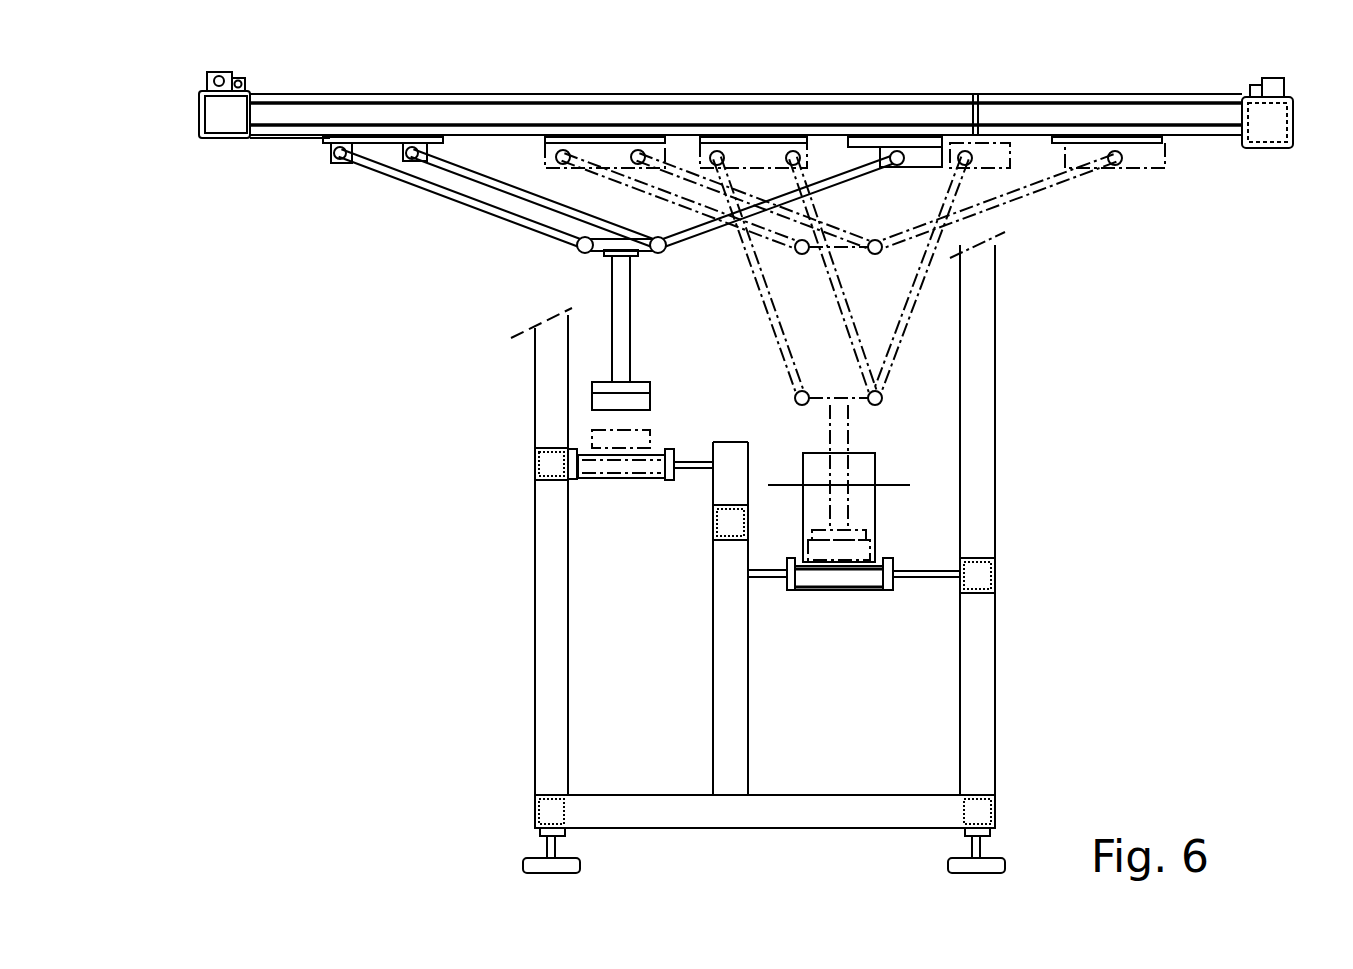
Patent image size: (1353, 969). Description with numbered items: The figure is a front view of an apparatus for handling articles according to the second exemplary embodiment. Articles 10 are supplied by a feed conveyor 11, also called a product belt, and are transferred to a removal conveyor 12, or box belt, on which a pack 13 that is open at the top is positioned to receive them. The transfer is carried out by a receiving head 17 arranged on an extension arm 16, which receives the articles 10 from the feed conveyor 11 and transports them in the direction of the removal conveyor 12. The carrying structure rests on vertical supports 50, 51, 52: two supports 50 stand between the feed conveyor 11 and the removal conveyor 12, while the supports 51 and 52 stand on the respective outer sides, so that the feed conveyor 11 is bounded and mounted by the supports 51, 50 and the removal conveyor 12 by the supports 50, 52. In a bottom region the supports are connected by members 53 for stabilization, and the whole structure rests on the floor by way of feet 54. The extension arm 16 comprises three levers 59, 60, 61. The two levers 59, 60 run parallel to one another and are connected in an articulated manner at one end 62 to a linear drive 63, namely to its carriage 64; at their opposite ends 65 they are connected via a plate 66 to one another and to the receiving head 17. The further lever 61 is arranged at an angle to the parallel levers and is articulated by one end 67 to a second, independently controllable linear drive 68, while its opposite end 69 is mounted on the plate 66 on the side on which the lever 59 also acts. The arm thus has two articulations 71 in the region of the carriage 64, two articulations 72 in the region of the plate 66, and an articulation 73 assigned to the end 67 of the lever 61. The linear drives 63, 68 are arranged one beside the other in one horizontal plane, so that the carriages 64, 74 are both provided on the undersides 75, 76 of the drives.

The articles 10 is at (600, 398).
The feed conveyor 11 is at (638, 485).
The removal conveyor 12 is at (858, 598).
The pack 13 is at (885, 510).
The extension arm 16 is at (712, 195).
The receiving head 17 is at (650, 345).
The supports 50 is at (735, 738).
The support 51 is at (550, 680).
The support 52 is at (980, 702).
The members 53 is at (873, 808).
The feet 54 is at (538, 865).
The lever 59 is at (490, 180).
The lever 60 is at (480, 218).
The lever 61 is at (820, 170).
The end 62 is at (486, 176).
The linear drive 63 is at (186, 110).
The carriage 64 is at (322, 142).
The ends 65 is at (645, 222).
The plate 66 is at (612, 252).
The end 67 is at (886, 180).
The linear drive 68 is at (1300, 120).
The end 69 is at (683, 250).
The articulations 71 is at (412, 146).
The articulations 72 is at (588, 236).
The articulation 73 is at (898, 150).
The carriage 74 is at (840, 140).
The underside 75 is at (268, 135).
The underside 76 is at (1212, 142).